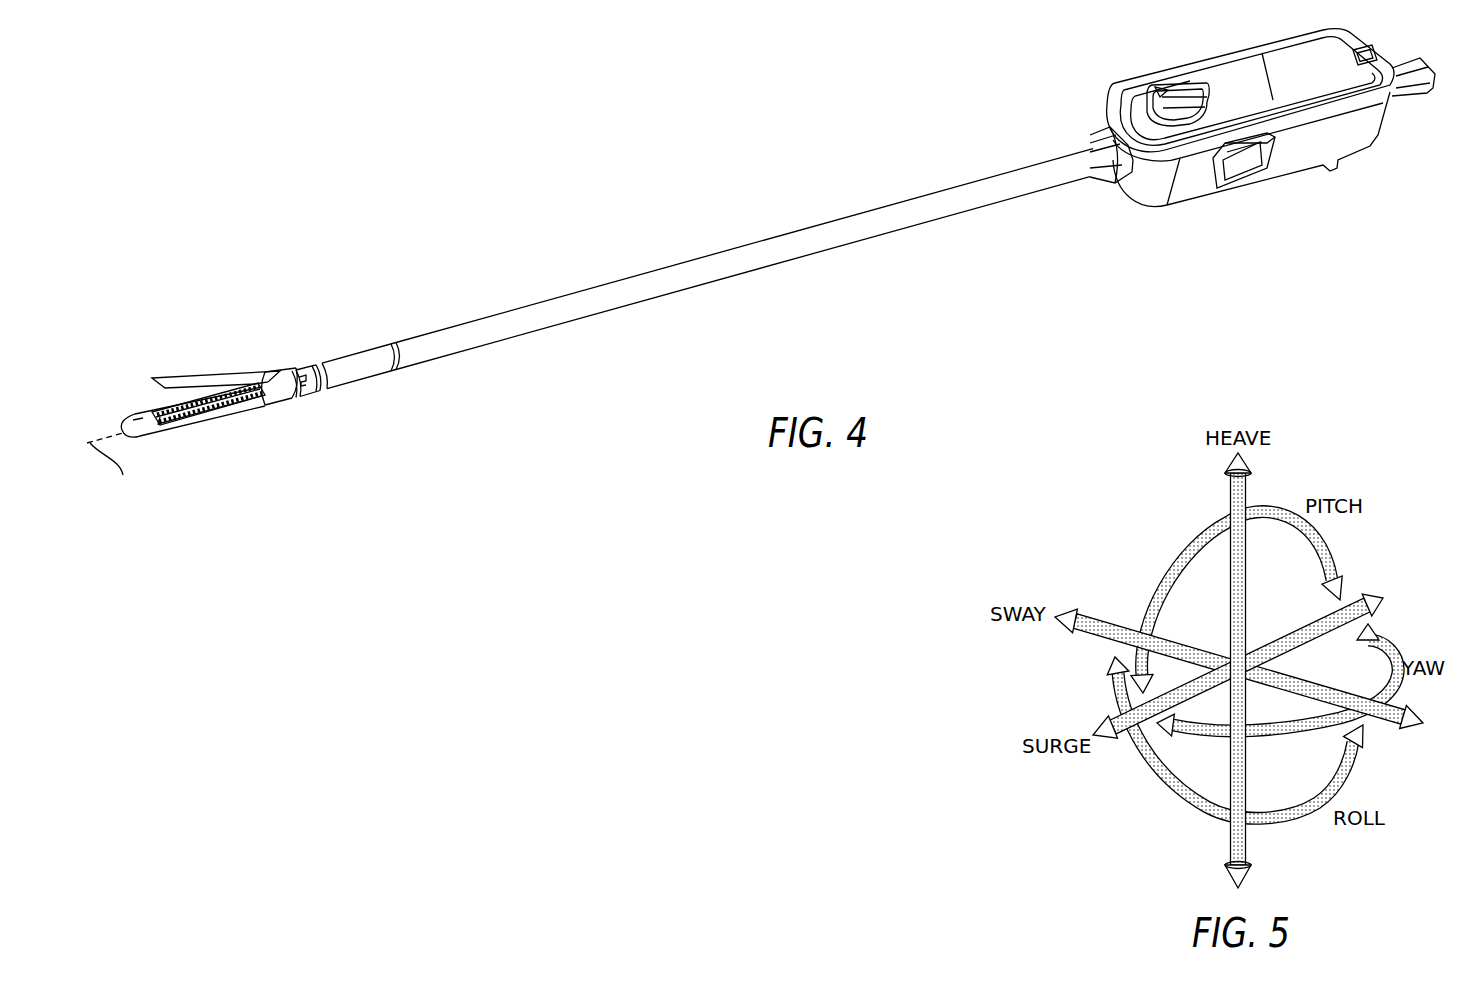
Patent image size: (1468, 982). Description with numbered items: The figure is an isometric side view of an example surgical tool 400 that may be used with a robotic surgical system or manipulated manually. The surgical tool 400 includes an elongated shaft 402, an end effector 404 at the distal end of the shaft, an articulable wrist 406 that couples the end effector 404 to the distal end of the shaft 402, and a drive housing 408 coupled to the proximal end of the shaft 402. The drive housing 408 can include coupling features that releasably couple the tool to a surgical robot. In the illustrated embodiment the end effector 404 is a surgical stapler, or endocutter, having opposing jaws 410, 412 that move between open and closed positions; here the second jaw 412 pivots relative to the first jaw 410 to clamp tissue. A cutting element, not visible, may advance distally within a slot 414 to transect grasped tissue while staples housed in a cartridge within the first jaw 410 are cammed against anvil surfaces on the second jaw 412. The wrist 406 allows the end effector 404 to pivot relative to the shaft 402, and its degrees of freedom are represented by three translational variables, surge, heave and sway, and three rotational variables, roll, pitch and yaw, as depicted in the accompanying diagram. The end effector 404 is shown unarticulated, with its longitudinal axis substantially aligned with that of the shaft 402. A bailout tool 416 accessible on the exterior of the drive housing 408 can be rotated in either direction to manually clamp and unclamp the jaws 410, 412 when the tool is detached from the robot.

The surgical tool 400 is at (818, 97).
The elongated shaft 402 is at (618, 281).
The end effector 404 is at (228, 348).
The articulable wrist 406 is at (353, 389).
The drive housing 408 is at (1290, 168).
The first jaw 410 is at (222, 415).
The second jaw 412 is at (187, 372).
The slot 414 is at (191, 416).
The bailout tool 416 is at (1152, 80).